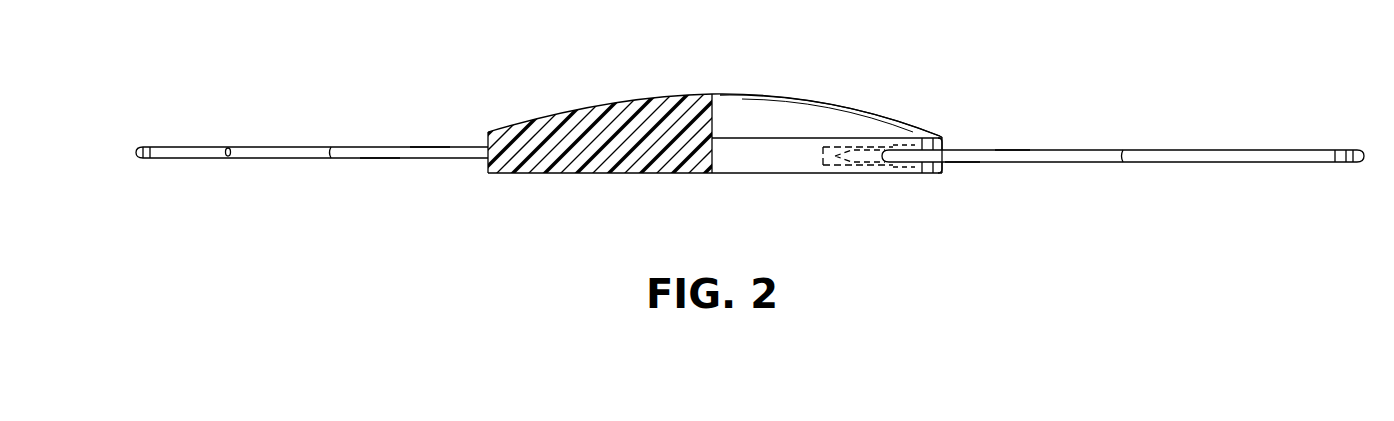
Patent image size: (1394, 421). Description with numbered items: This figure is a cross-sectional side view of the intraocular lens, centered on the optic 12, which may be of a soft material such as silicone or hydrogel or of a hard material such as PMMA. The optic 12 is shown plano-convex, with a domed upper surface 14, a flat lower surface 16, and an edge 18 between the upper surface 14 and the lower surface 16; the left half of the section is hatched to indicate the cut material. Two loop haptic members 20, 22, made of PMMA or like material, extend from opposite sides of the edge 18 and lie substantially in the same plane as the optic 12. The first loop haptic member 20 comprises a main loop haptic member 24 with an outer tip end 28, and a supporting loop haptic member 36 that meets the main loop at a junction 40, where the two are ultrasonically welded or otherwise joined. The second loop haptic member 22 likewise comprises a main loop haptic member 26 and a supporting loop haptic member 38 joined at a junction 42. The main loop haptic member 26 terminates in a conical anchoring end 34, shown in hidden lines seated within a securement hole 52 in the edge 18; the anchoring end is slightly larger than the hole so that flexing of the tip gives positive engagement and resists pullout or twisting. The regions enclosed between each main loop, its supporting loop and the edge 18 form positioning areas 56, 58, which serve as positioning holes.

The optic 12 is at (805, 97).
The upper surface 14 is at (857, 107).
The lower surface 16 is at (748, 175).
The edge 18 is at (945, 173).
The loop haptic member 20 is at (157, 134).
The loop haptic member 22 is at (1313, 134).
The main loop haptic member 24 is at (267, 145).
The main loop haptic member 26 is at (1248, 163).
The outer tip end 28 is at (230, 156).
The conical anchoring end 34 is at (833, 158).
The supporting loop haptic member 36 is at (377, 153).
The supporting loop haptic member 38 is at (1010, 155).
The junction 40 is at (332, 146).
The junction 42 is at (1122, 151).
The securement hole 52 is at (863, 167).
The positioning area 56 is at (425, 152).
The positioning area 58 is at (957, 158).